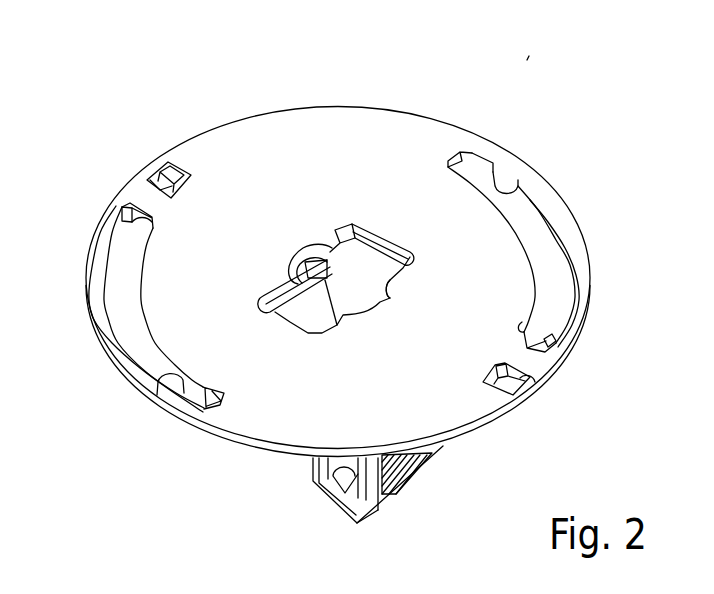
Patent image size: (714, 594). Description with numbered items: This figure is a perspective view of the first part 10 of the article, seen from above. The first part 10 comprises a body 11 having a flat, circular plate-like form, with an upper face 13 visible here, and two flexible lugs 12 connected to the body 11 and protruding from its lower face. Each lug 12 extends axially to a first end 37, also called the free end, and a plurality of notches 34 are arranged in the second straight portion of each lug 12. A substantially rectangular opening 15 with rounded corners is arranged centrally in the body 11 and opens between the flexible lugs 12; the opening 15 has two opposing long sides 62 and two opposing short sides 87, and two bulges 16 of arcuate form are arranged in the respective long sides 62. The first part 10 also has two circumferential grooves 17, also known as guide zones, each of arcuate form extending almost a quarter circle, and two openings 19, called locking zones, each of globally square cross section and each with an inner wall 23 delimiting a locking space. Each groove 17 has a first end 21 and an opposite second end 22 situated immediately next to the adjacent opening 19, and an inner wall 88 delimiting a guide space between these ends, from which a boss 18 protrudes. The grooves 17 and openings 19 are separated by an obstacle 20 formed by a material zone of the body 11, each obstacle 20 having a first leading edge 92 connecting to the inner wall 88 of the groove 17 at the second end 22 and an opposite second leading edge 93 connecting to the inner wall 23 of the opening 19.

The first part 10 is at (529, 58).
The body 11 is at (357, 120).
The flexible lug 12 is at (368, 500).
The upper face 13 is at (250, 164).
The opening 15 is at (349, 279).
The bulge 16 is at (304, 260).
The circumferential groove 17 is at (127, 317).
The boss 18 is at (172, 383).
The opening 19 is at (163, 182).
The obstacle 20 is at (143, 202).
The first end 21 is at (204, 410).
The second end 22 is at (121, 222).
The inner wall 23 is at (187, 175).
The notch 34 is at (403, 482).
The first end 37 is at (327, 505).
The long side 62 is at (336, 229).
The short side 87 is at (388, 224).
The inner wall 88 is at (150, 222).
The first leading edge 92 is at (113, 210).
The second leading edge 93 is at (152, 181).